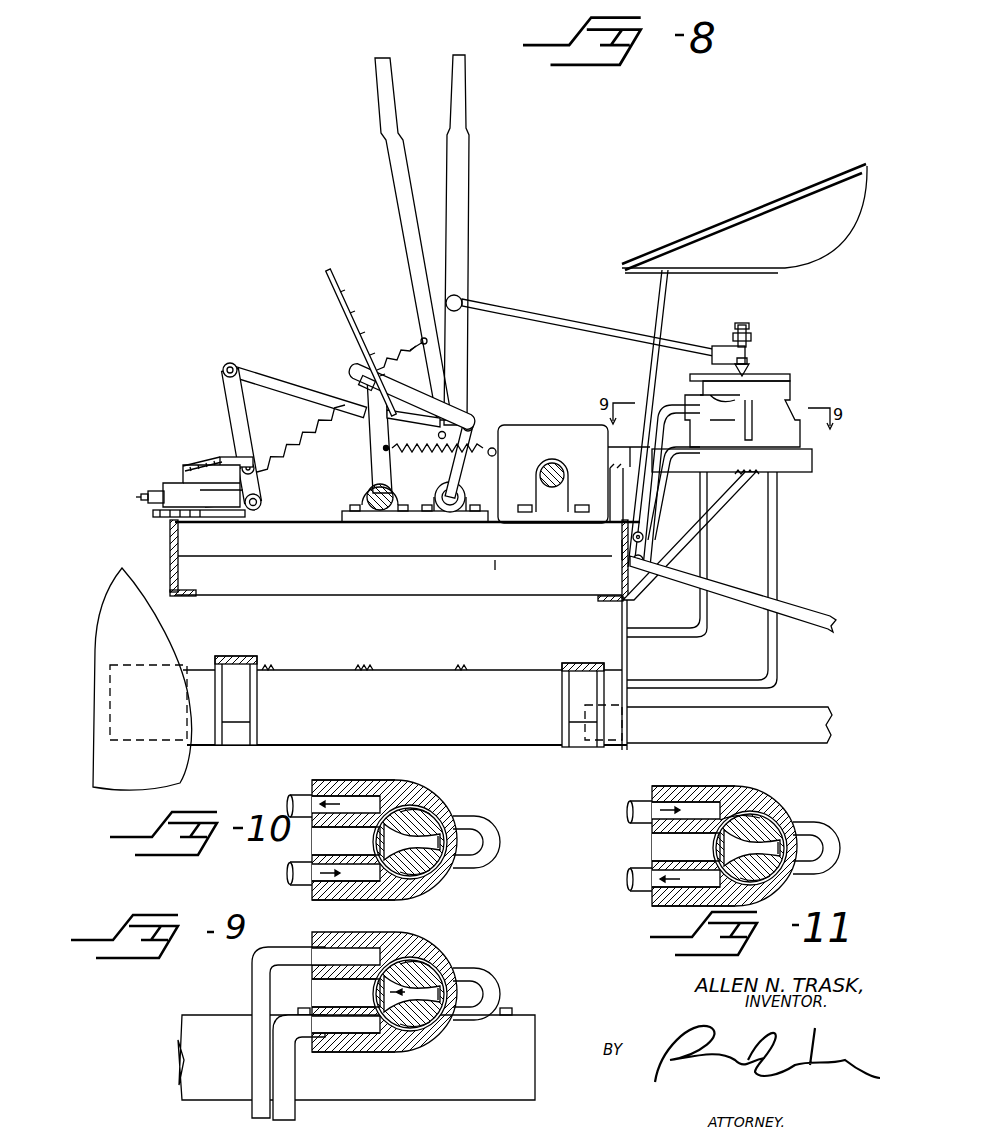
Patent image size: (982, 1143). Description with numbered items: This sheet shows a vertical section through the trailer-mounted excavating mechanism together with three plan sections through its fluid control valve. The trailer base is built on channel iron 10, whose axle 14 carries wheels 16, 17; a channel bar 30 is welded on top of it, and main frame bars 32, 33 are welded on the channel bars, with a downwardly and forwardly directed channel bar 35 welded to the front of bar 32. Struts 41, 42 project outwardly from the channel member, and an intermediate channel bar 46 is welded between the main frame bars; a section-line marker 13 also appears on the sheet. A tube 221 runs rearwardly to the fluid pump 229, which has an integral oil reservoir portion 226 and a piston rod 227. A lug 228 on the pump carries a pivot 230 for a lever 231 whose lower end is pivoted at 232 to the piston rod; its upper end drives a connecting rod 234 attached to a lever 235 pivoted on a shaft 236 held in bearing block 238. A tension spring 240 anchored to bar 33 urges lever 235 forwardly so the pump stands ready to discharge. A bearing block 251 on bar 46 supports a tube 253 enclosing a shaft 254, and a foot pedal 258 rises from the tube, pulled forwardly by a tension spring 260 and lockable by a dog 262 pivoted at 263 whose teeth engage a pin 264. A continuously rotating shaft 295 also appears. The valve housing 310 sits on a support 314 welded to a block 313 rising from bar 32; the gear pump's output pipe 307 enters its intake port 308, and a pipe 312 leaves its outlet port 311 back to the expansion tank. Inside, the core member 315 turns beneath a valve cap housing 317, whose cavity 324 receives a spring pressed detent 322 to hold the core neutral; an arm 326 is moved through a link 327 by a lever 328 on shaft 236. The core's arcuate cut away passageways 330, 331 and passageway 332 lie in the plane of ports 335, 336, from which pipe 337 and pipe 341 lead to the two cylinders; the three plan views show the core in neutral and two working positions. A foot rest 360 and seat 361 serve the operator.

In FIG. 8, the channel iron 10 is at (500, 745).
In FIG. 8, the section line 13- 13 is at (354, 454).
In FIG. 8, the axle 14 is at (427, 457).
In FIG. 8, the wheel 16 is at (178, 763).
In FIG. 8, the wheel 17 is at (803, 712).
In FIG. 8, the channel bar 30 is at (415, 642).
In FIG. 8, the main frame bar 32 is at (621, 575).
In FIG. 8, the main frame bar 33 is at (170, 556).
In FIG. 8, the channel bar 35 is at (812, 606).
In FIG. 8, the strut 41 is at (562, 697).
In FIG. 8, the strut 42 is at (258, 699).
In FIG. 8, the intermediate channel bar 46 is at (495, 561).
In FIG. 8, the tube 221 is at (146, 496).
In FIG. 8, the oil reservoir portion 226 is at (194, 461).
In FIG. 8, the piston rod 227 is at (241, 518).
In FIG. 8, the lug 228 is at (230, 457).
In FIG. 8, the fluid pump 229 is at (190, 485).
In FIG. 8, the pivot 230 is at (248, 462).
In FIG. 8, the lever 231 is at (246, 420).
In FIG. 8, the pivot 232 is at (262, 503).
In FIG. 8, the connecting rod 234 is at (290, 382).
In FIG. 8, the lever 235 is at (413, 252).
In FIG. 8, the shaft 236 is at (455, 517).
In FIG. 8, the bearing block 238 is at (451, 513).
In FIG. 8, the tension spring 240 is at (298, 444).
In FIG. 8, the bearing block 251 is at (393, 523).
In FIG. 8, the tube 253 is at (363, 460).
In FIG. 8, the shaft 254 is at (375, 513).
In FIG. 8, the foot pedal 258 is at (349, 320).
In FIG. 8, the tension spring 260 is at (482, 459).
In FIG. 8, the dog 262 is at (462, 414).
In FIG. 8, the pivot 263 is at (475, 426).
In FIG. 8, the pin 264 is at (390, 385).
In FIG. 8, the shaft 295 is at (552, 464).
In FIG. 8, the output pipe 307 is at (777, 552).
In FIG. 10, the intake port 308 is at (497, 842).
In FIG. 11, the intake port 308 is at (828, 840).
In FIG. 9, the intake port 308 is at (492, 988).
In FIG. 8, the valve housing 310 is at (758, 410).
In FIG. 10, the valve housing 310 is at (384, 831).
In FIG. 11, the valve housing 310 is at (724, 838).
In FIG. 9, the valve housing 310 is at (384, 980).
In FIG. 10, the outlet port 311 is at (331, 841).
In FIG. 11, the outlet port 311 is at (671, 847).
In FIG. 9, the outlet port 311 is at (327, 992).
In FIG. 8, the pipe 312 is at (705, 549).
In FIG. 8, the block 313 is at (612, 482).
In FIG. 8, the support 314 is at (812, 462).
In FIG. 9, the support 314 is at (538, 1024).
In FIG. 10, the core member 315 is at (419, 824).
In FIG. 11, the core member 315 is at (777, 853).
In FIG. 9, the core member 315 is at (426, 1001).
In FIG. 8, the valve cap housing 317 is at (787, 376).
In FIG. 8, the spring pressed detent 322 is at (746, 375).
In FIG. 8, the cavity 324 is at (722, 396).
In FIG. 8, the arm 326 is at (748, 357).
In FIG. 8, the link 327 is at (590, 336).
In FIG. 8, the lever 328 is at (461, 249).
In FIG. 10, the arcuate cut away passageway 330 is at (436, 800).
In FIG. 11, the arcuate cut away passageway 330 is at (726, 818).
In FIG. 9, the arcuate cut away passageway 330 is at (420, 947).
In FIG. 10, the arcuate cut away passageway 331 is at (420, 886).
In FIG. 11, the arcuate cut away passageway 331 is at (776, 891).
In FIG. 9, the arcuate cut away passageway 331 is at (418, 1041).
In FIG. 10, the passageway 332 is at (460, 863).
In FIG. 11, the passageway 332 is at (800, 823).
In FIG. 9, the passageway 332 is at (457, 972).
In FIG. 10, the port 335 is at (353, 777).
In FIG. 11, the port 335 is at (693, 782).
In FIG. 10, the port 336 is at (356, 900).
In FIG. 11, the port 336 is at (693, 906).
In FIG. 9, the port 336 is at (353, 1052).
In FIG. 8, the pipe 337 is at (664, 406).
In FIG. 10, the pipe 337 is at (305, 793).
In FIG. 11, the pipe 337 is at (645, 796).
In FIG. 9, the pipe 337 is at (252, 972).
In FIG. 8, the pipe 341 is at (662, 452).
In FIG. 10, the pipe 341 is at (310, 883).
In FIG. 11, the pipe 341 is at (645, 887).
In FIG. 9, the pipe 341 is at (295, 1070).
In FIG. 8, the foot rest 360 is at (600, 428).
In FIG. 8, the seat 361 is at (812, 198).